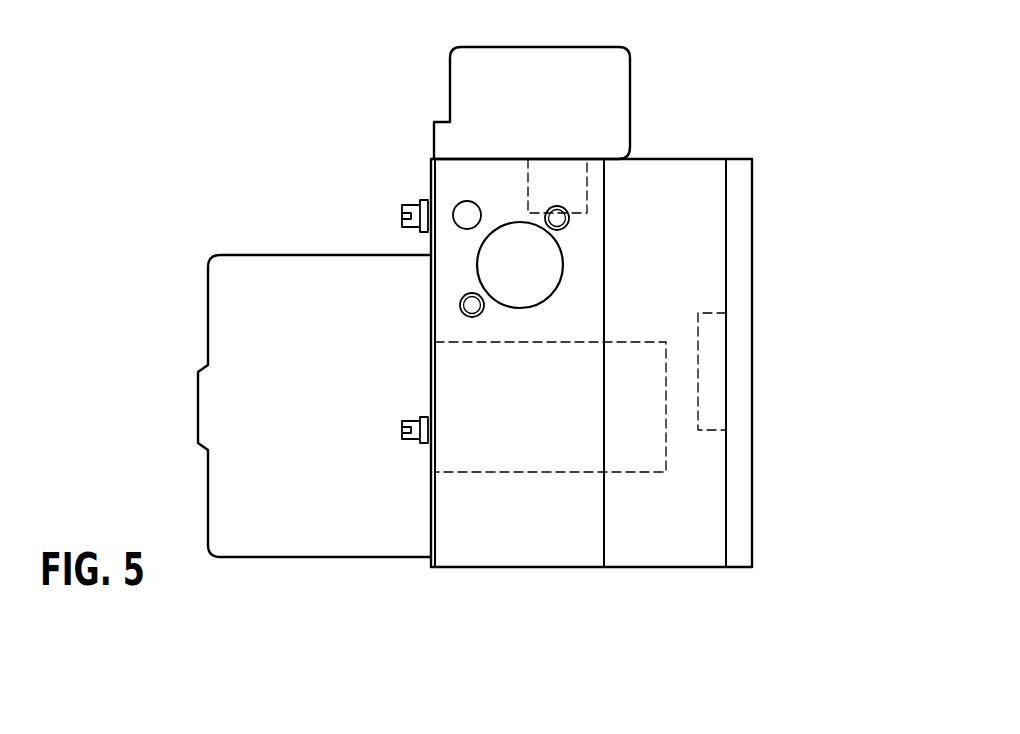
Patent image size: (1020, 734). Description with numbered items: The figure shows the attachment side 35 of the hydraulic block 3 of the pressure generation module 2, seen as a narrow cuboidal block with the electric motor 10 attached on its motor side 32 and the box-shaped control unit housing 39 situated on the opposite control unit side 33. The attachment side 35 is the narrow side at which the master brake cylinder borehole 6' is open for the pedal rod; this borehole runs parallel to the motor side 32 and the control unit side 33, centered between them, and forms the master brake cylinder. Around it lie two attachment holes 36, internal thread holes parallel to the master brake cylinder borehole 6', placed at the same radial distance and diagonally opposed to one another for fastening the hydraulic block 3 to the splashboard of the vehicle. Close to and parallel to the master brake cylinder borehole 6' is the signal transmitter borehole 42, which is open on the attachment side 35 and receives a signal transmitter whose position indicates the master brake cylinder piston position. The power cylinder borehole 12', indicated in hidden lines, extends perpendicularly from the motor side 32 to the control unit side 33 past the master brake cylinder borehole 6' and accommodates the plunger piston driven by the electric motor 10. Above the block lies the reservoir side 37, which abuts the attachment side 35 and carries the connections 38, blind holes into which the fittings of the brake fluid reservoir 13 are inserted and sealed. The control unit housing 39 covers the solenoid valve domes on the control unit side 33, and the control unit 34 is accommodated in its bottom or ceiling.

The pressure generation module 2 is at (173, 119).
The brake fluid reservoir 13 is at (483, 87).
The hydraulic block 3 is at (591, 407).
The attachment side 35 is at (520, 526).
The motor side 32 is at (428, 480).
The control unit side 33 is at (610, 484).
The control unit housing 39 is at (715, 232).
The reservoir side 37 is at (502, 156).
The connections 38 is at (538, 178).
The power cylinder borehole 12' is at (624, 412).
The control unit 34 is at (715, 393).
The master brake cylinder borehole 6' is at (571, 265).
The signal transmitter borehole 42 is at (463, 228).
The attachment holes 36 is at (565, 213).
The electric motor 10 is at (257, 532).